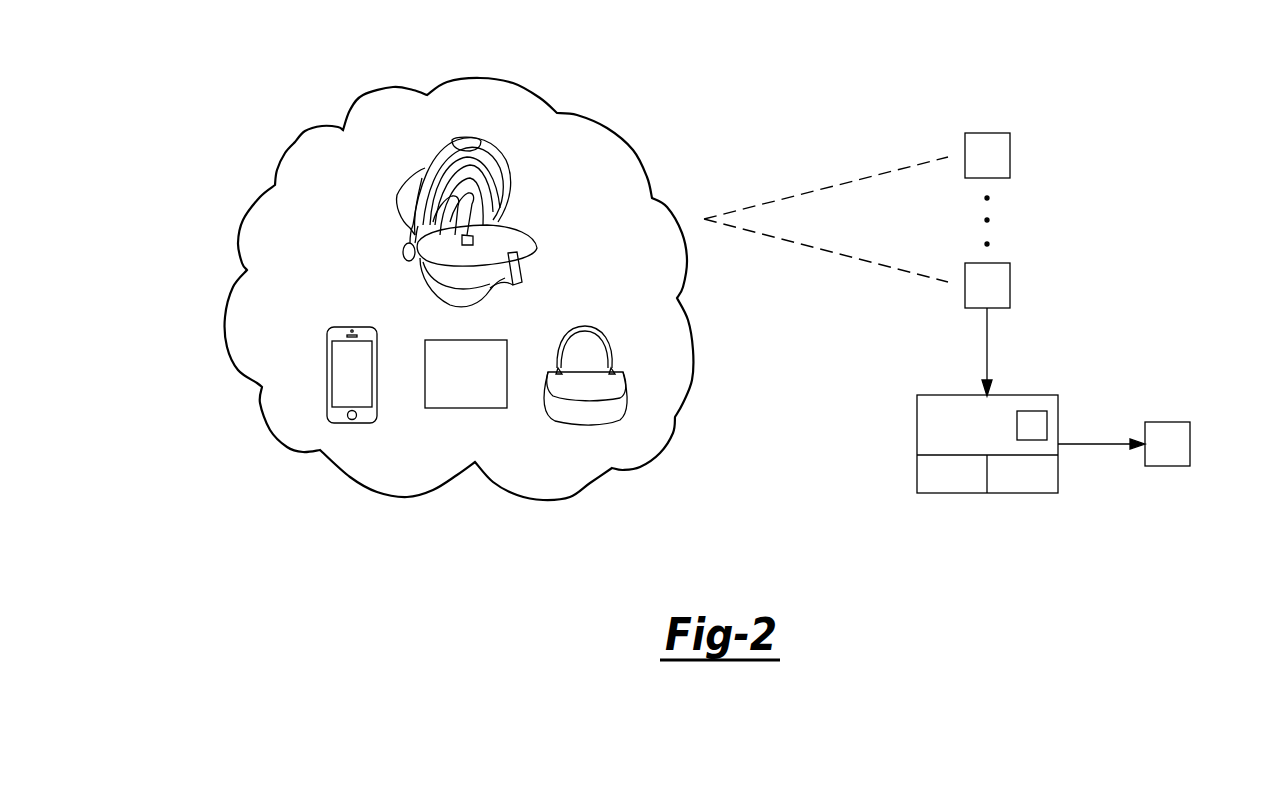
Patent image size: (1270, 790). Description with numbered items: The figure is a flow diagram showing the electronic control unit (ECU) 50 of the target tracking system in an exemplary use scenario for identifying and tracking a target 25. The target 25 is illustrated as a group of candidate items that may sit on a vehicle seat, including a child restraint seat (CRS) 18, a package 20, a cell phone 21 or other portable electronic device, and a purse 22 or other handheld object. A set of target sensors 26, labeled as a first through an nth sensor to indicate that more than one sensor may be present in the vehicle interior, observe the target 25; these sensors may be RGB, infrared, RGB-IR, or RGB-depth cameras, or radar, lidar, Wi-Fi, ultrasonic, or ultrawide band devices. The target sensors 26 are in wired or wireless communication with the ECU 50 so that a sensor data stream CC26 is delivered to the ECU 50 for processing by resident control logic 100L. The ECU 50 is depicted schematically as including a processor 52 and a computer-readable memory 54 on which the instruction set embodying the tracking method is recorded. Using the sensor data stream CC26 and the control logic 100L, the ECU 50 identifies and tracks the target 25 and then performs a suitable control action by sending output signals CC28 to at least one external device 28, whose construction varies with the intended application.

The child restraint seat (CRS) 18 is at (392, 187).
The package 20 is at (479, 387).
The cell phone 21 is at (348, 327).
The purse 22 is at (585, 326).
The target 25 is at (295, 142).
The target sensors 26 is at (1021, 133).
The external device 28 is at (1190, 444).
The electronic control unit (ECU) 50 is at (1024, 395).
The processor 52 is at (964, 474).
The memory 54 is at (1022, 477).
The control logic 100L is at (1047, 425).
The sensor data stream CC26 is at (985, 333).
The output signals to external device CC28 is at (1100, 447).